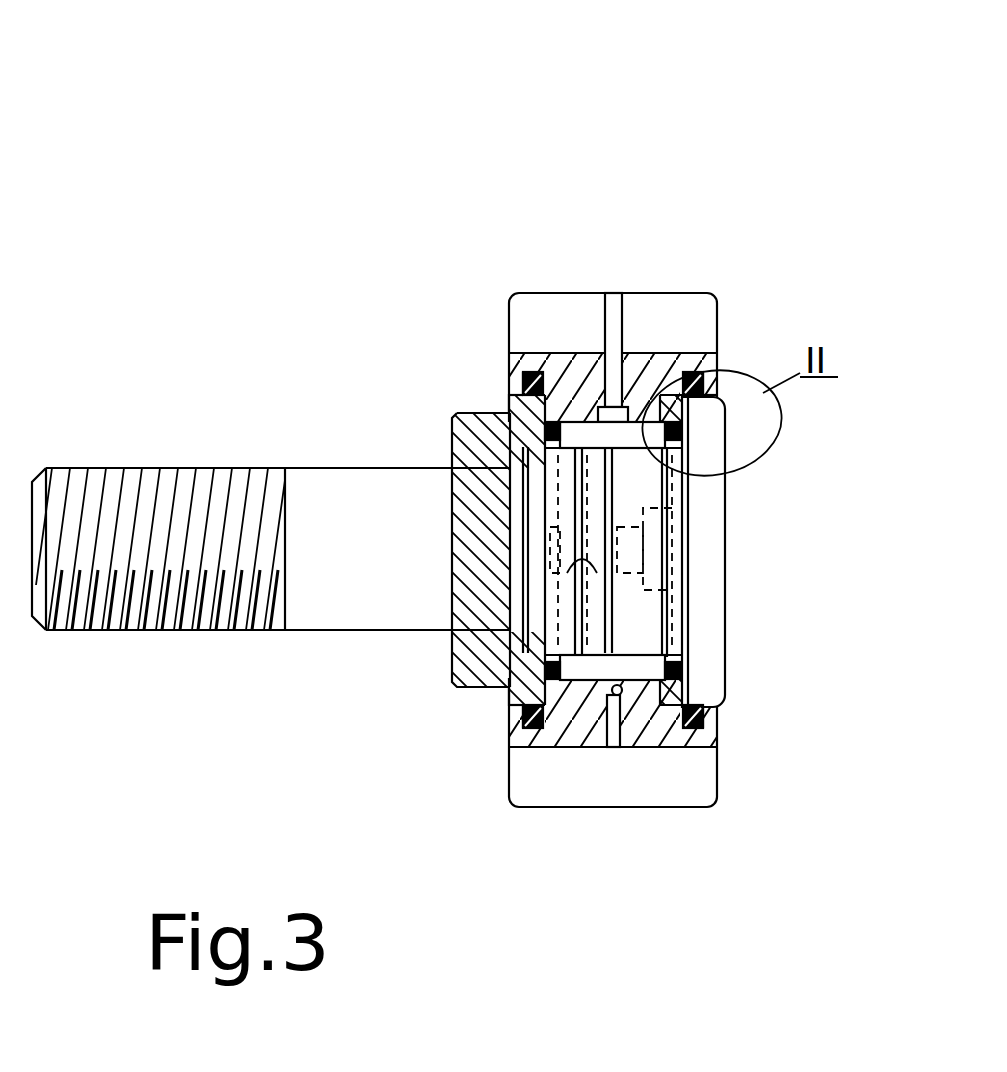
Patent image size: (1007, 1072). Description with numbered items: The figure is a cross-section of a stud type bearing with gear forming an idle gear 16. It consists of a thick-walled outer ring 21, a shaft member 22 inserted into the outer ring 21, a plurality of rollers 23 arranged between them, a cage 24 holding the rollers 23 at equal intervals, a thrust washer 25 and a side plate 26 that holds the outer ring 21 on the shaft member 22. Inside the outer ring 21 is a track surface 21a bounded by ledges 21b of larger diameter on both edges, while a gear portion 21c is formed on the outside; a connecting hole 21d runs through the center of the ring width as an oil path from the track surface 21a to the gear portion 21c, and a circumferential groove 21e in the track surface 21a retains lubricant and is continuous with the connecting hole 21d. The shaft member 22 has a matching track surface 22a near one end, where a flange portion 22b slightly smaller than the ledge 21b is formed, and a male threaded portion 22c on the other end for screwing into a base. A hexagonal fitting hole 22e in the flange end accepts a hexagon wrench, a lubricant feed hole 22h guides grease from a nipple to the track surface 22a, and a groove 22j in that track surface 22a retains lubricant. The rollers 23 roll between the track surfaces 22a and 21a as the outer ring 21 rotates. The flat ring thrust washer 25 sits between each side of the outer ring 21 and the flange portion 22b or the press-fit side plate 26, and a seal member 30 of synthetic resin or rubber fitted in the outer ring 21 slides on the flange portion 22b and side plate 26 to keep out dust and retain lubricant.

The idle gear 16 is at (258, 148).
The outer ring 21 is at (542, 292).
The track surface 21a is at (582, 430).
The ledges 21b is at (512, 392).
The gear portion 21c is at (703, 316).
The connecting hole 21d is at (612, 405).
The groove 21e is at (624, 695).
The shaft member 22 is at (300, 467).
The track surface 22a is at (612, 447).
The flange portion 22b is at (707, 675).
The male threaded portion 22c is at (158, 612).
The fitting hole 22e is at (697, 592).
The lubricant feed hole 22h is at (598, 668).
The groove 22j is at (608, 611).
The rollers 23 is at (624, 430).
The cage 24 is at (650, 440).
The thrust washer 25 is at (505, 408).
The side plate 26 is at (450, 673).
The seal member 30 is at (512, 388).